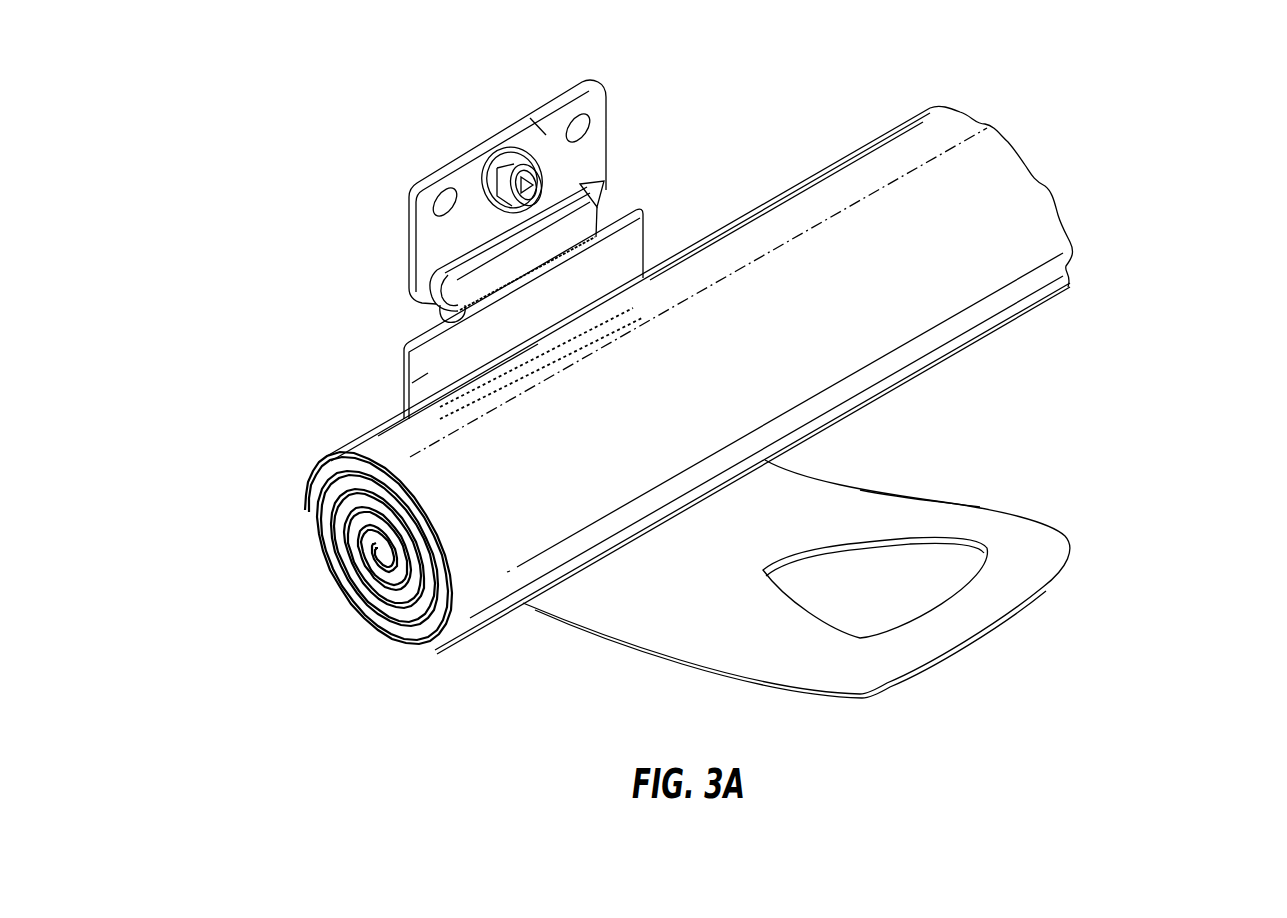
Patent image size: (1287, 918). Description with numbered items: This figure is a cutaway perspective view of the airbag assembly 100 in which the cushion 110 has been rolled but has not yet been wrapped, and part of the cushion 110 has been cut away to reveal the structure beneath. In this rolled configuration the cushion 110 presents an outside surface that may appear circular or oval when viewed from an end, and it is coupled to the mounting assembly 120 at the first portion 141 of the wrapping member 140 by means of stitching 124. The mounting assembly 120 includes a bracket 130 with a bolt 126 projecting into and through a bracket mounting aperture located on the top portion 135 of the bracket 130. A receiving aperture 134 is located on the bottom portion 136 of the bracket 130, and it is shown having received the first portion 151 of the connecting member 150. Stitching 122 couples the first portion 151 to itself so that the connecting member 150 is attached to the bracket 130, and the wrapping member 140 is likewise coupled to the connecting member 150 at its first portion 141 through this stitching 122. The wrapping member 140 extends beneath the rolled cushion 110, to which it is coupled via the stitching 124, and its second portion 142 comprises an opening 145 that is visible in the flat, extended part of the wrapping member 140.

The airbag assembly 100 is at (245, 397).
The cushion 110 is at (720, 380).
The mounting assembly 120 is at (467, 176).
The stitching 122 is at (472, 307).
The stitching 124 is at (547, 360).
The bolt 126 is at (500, 173).
The bracket 130 is at (569, 156).
The receiving aperture 134 is at (612, 182).
The top portion 135 is at (538, 124).
The bottom portion 136 is at (620, 195).
The wrapping member 140 is at (782, 453).
The first portion 141 is at (412, 383).
The second portion 142 is at (937, 507).
The opening 145 is at (925, 586).
The connecting member 150 is at (444, 265).
The first portion 151 is at (452, 300).